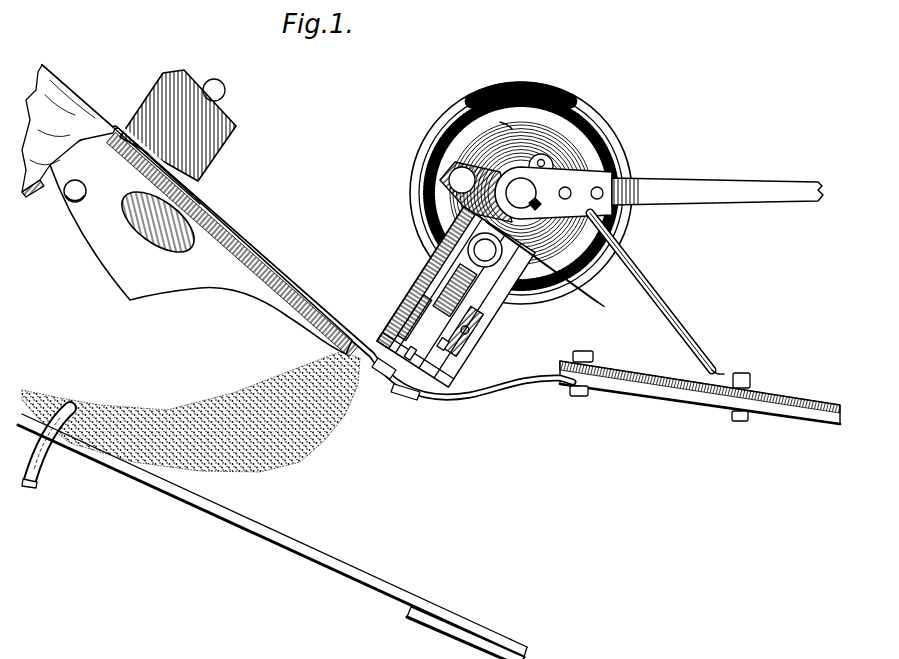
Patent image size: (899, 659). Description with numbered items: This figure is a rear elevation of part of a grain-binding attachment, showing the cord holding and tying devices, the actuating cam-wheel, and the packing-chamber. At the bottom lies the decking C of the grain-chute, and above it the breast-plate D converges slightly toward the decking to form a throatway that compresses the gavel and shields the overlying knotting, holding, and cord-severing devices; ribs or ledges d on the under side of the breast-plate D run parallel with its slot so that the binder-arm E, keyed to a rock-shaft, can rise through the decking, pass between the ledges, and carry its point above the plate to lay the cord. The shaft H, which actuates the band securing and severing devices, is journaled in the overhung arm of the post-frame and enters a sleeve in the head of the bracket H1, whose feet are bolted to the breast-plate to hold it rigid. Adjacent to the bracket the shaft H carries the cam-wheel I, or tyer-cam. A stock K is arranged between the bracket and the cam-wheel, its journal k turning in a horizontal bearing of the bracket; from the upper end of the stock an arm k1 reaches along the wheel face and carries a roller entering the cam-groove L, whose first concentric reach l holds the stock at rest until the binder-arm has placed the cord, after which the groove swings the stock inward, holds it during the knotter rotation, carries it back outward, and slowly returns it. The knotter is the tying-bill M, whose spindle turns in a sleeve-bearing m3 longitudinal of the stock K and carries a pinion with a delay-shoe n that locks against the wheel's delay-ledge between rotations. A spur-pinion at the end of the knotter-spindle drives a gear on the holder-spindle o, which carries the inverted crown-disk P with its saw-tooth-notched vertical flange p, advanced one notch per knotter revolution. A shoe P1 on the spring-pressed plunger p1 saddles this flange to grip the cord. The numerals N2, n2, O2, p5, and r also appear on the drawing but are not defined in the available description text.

The breast-plate D is at (307, 231).
The ribs or ledges d is at (201, 241).
The cam-wheel I is at (521, 193).
The ratchet teeth N2 is at (531, 88).
The rim pawl seat n2 is at (626, 162).
The cam-groove L is at (548, 128).
The first concentric reach l is at (503, 118).
The shaft H is at (523, 194).
The bracket H1 is at (426, 278).
The journal k is at (485, 250).
The arm k1 is at (462, 180).
The stock K is at (530, 304).
The connecting rod O2 is at (657, 293).
The inverted crown-disk P is at (466, 369).
The shoe P1 is at (380, 373).
The tying-bill M is at (404, 394).
The sleeve-bearing m3 is at (414, 318).
The vertical flange p is at (473, 331).
The shank or plunger p1 is at (453, 339).
The pin p5 is at (407, 342).
The holder-spindle o is at (476, 331).
The spring r is at (455, 289).
The delay-shoe n is at (515, 353).
The binder-arm E is at (40, 470).
The decking C is at (250, 524).